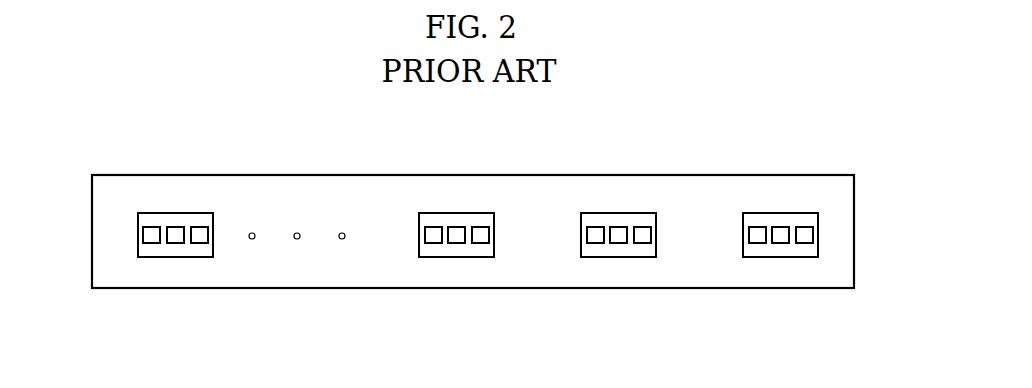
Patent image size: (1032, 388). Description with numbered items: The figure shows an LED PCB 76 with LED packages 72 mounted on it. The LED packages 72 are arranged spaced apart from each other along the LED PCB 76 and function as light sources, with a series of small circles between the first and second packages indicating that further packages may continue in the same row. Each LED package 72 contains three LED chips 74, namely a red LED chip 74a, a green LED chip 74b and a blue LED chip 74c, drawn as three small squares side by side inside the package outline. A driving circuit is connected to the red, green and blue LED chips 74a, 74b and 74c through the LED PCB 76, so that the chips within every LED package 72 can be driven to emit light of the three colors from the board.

The LED package 72 is at (180, 250).
The LED chips 74 is at (177, 170).
The LED chip 74a is at (148, 226).
The LED chip 74b is at (176, 226).
The LED chip 74c is at (216, 190).
The LED PCB 76 is at (449, 194).